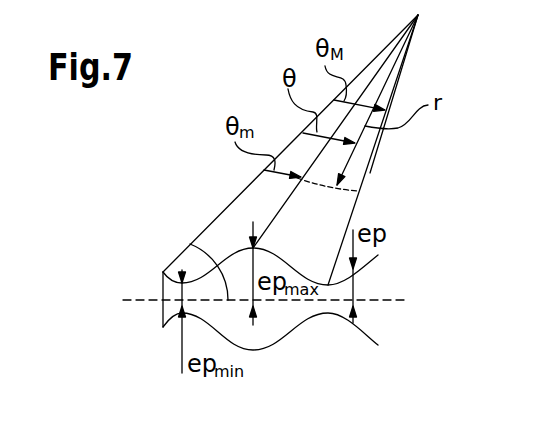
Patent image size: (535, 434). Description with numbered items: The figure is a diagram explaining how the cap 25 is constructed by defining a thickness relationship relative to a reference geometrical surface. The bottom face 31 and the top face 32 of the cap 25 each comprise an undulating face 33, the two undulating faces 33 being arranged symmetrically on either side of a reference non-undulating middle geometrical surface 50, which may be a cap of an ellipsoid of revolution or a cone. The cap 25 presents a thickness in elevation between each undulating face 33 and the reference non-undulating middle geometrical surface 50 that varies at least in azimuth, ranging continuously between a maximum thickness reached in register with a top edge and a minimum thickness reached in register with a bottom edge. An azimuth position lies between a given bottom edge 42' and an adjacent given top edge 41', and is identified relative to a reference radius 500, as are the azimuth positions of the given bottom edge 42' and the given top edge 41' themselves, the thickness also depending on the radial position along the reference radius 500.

The cap 25 is at (216, 285).
The undulating face 33 is at (258, 285).
The top face 32 is at (258, 211).
The bottom face 31 is at (270, 373).
The reference non-undulating middle geometrical surface 50 is at (198, 243).
The reference radius 500 is at (308, 150).
The given top edge 41' is at (340, 131).
The given bottom edge 42' is at (375, 150).